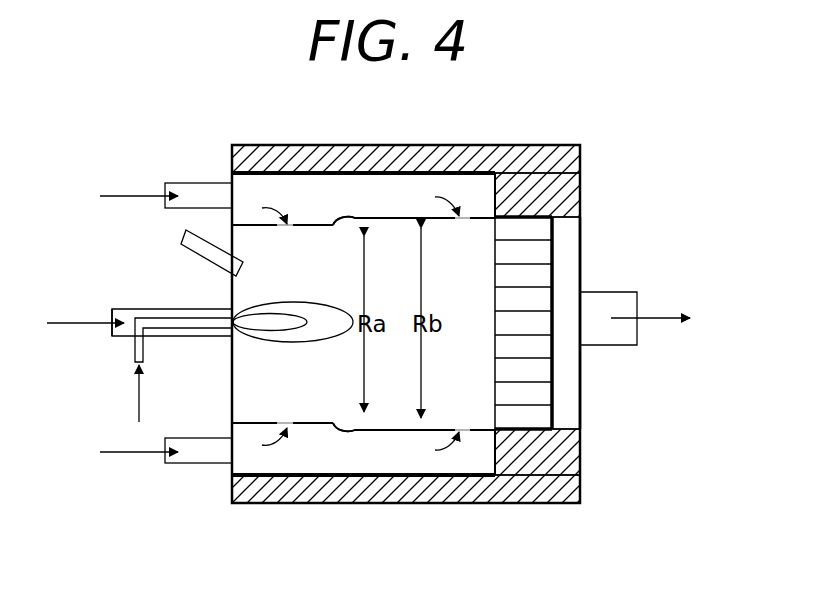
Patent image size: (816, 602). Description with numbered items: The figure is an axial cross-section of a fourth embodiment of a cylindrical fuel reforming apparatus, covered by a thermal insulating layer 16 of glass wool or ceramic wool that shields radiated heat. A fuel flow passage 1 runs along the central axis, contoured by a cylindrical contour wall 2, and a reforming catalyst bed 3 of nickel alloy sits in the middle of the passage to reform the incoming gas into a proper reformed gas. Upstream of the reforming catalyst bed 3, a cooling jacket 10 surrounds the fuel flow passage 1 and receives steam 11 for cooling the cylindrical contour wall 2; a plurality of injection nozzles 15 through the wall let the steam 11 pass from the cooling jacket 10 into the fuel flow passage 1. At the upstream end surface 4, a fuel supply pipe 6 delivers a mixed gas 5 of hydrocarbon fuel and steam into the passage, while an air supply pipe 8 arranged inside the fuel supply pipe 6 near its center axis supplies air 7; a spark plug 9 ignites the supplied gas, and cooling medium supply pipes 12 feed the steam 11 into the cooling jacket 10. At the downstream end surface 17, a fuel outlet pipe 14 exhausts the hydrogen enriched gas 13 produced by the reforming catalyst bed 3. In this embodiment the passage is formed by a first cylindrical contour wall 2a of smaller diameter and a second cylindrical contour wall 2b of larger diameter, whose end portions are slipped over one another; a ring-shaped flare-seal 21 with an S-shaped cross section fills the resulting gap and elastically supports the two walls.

The fuel flow passage 1 is at (470, 377).
The cylindrical contour wall 2 is at (570, 219).
The first cylindrical contour wall 2a is at (263, 225).
The second cylindrical contour wall 2b is at (392, 218).
The reforming catalyst bed 3 is at (530, 279).
The end surface 4 is at (230, 283).
The mixed gas 5 is at (68, 323).
The fuel supply pipe 6 is at (112, 310).
The air 7 is at (140, 408).
The air supply pipe 8 is at (132, 347).
The spark plug 9 is at (182, 245).
The cooling jacket 10 is at (305, 186).
The steam 11 is at (127, 192).
The cooling medium supply pipes 12 is at (195, 183).
The hydrogen enriched gas 13 is at (675, 313).
The fuel outlet pipe 14 is at (628, 345).
The injection nozzles 15 is at (288, 225).
The thermal insulating layer 16 is at (535, 158).
The end surface 17 is at (583, 385).
The flare-seal 21 is at (323, 217).